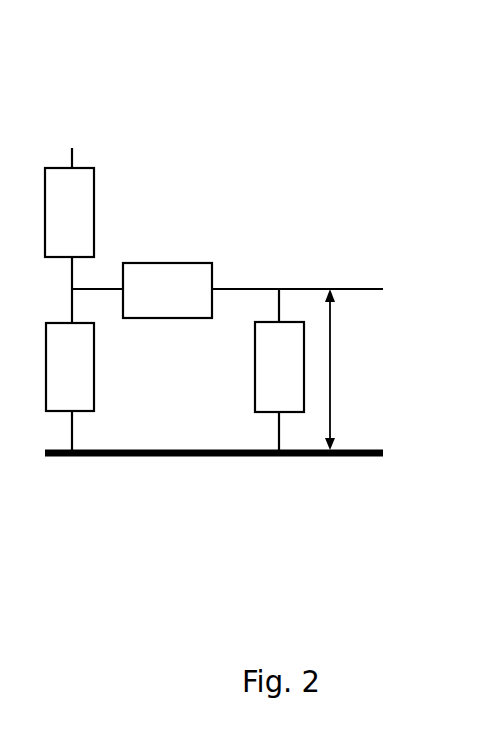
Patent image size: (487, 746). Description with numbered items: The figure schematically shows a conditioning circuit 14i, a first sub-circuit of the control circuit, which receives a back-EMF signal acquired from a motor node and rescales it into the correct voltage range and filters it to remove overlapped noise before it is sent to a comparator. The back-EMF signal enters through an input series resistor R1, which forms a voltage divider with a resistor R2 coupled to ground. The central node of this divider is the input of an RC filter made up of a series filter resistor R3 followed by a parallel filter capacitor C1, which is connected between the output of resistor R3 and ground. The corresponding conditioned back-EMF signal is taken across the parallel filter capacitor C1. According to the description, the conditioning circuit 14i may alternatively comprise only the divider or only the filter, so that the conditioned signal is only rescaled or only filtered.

The conditioning circuit 14i is at (292, 129).
The input series resistor R1 is at (69, 212).
The resistor R2 is at (70, 367).
The series filter resistor R3 is at (167, 290).
The parallel filter capacitor C1 is at (279, 367).